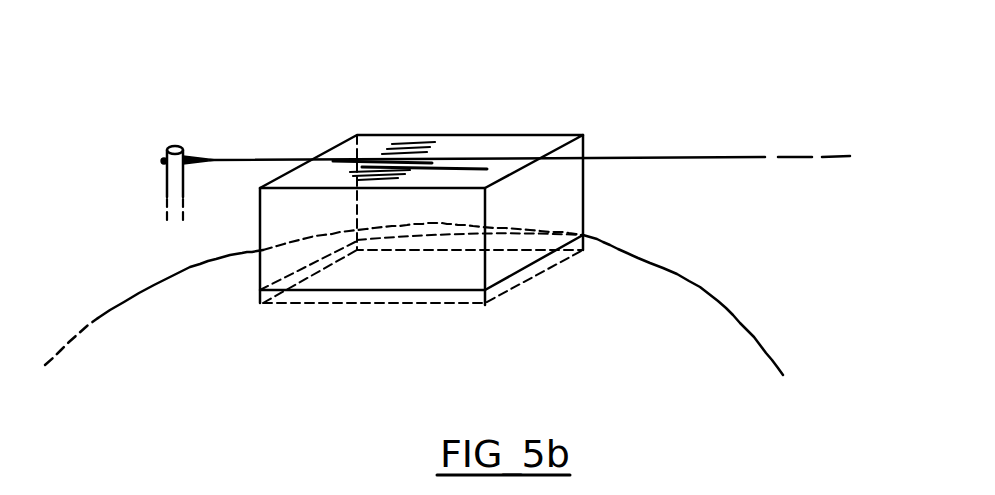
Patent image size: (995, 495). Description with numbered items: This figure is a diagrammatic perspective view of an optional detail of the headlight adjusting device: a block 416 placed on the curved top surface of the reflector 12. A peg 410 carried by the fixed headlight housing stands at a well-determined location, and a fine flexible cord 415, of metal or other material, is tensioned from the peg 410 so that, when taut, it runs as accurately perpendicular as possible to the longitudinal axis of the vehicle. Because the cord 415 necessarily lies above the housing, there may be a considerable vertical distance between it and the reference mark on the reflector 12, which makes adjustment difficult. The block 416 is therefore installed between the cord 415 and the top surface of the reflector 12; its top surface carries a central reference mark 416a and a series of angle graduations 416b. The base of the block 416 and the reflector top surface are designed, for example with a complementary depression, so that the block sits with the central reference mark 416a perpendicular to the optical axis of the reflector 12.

The reflector 12 is at (682, 310).
The peg 410 is at (170, 190).
The fine flexible cord 415 is at (660, 157).
The block 416 is at (570, 192).
The central reference mark 416a is at (485, 167).
The angle graduations 416b is at (410, 135).